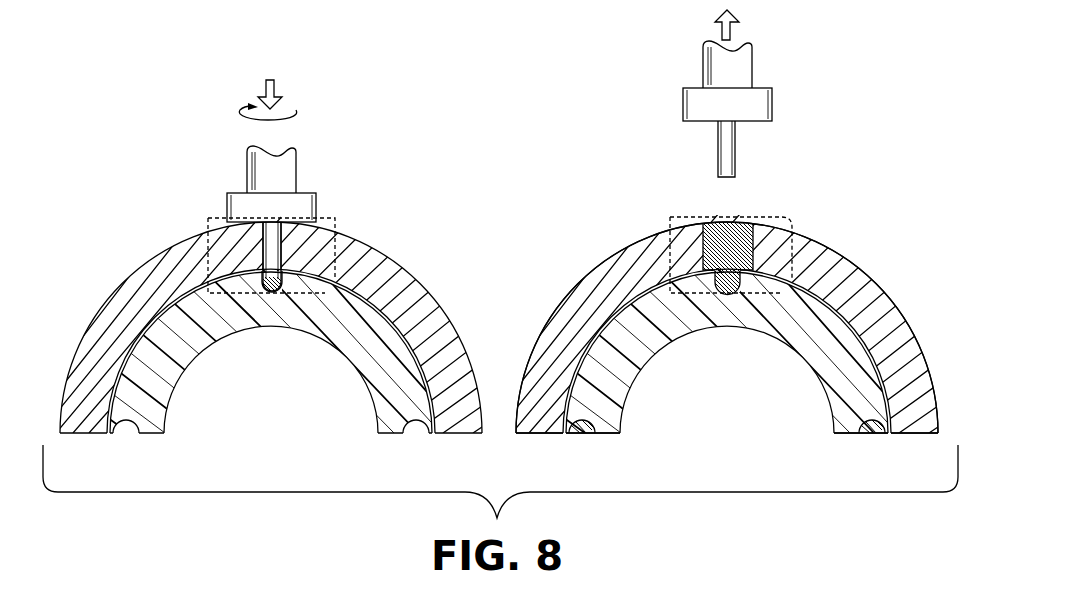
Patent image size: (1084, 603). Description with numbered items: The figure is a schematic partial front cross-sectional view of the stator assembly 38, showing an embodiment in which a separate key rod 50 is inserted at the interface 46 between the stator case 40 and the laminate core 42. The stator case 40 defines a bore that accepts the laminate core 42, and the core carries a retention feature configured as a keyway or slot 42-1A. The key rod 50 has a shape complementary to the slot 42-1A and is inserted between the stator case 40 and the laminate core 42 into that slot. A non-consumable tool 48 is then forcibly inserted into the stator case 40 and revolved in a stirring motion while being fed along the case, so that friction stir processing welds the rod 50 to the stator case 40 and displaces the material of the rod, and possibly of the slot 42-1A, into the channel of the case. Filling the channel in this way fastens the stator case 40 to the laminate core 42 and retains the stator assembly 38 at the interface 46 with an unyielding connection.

The stator assembly 38 is at (568, 252).
The stator case 40 is at (113, 298).
The laminate core 42 is at (178, 355).
The slot 42-1A is at (280, 300).
The interface 46 is at (208, 222).
The tool 48 is at (313, 172).
The key rod 50 is at (322, 265).